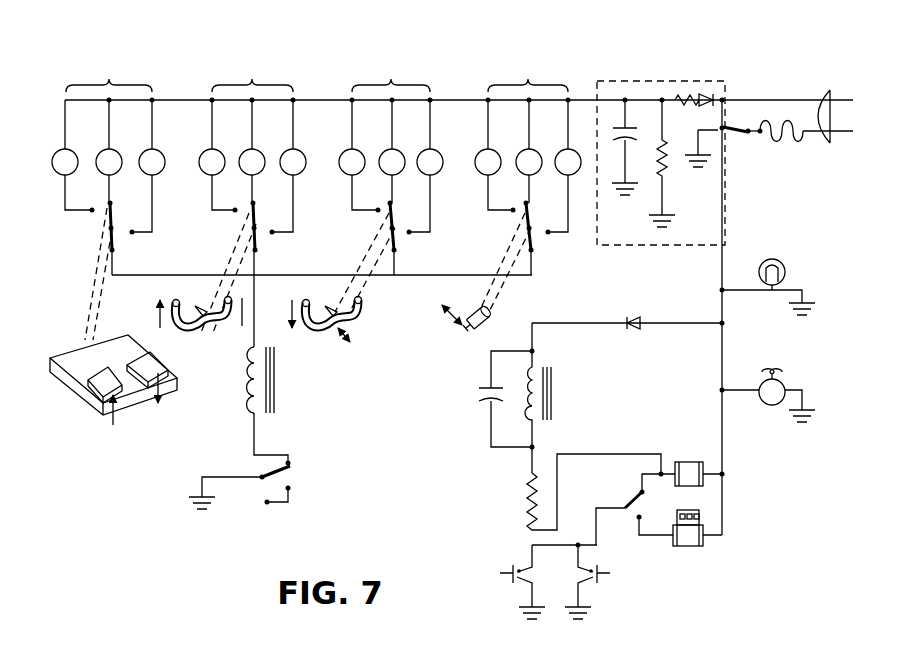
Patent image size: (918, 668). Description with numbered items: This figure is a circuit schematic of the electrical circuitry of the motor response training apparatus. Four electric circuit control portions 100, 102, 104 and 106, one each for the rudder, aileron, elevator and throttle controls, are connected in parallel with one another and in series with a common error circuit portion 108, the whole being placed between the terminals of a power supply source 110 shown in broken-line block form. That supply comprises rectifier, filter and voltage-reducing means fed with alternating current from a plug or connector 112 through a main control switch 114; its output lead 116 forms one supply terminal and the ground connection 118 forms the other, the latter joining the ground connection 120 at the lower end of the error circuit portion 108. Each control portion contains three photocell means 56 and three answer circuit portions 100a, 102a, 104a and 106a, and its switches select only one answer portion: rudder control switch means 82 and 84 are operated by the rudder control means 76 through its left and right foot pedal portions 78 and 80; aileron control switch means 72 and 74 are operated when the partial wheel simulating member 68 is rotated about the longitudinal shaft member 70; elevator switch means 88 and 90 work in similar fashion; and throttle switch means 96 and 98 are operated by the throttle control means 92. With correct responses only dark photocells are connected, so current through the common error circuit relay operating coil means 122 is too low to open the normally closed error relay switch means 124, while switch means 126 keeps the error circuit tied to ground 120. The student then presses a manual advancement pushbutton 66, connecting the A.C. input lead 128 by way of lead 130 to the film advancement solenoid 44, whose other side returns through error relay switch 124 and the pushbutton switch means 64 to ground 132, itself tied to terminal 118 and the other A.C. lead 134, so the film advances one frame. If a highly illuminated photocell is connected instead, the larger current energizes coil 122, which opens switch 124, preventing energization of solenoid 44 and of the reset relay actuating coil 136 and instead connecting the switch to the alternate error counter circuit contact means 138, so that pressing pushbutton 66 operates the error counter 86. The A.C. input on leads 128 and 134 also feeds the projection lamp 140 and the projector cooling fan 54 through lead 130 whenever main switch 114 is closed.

The film advancement solenoid 44 is at (690, 462).
The projector cooling fan 54 is at (790, 374).
The photocell means 56 is at (100, 150).
The advancement pushbutton switch means 64 is at (527, 567).
The manual advancement pushbuttons 66 is at (498, 573).
The partial wheel simulating member 68 is at (210, 326).
The longitudinal shaft member 70 is at (198, 306).
The aileron control switch means 72 is at (246, 213).
The aileron control switch means 74 is at (259, 243).
The rudder control means 76 is at (100, 420).
The left foot pedal portion 78 is at (98, 400).
The right foot pedal portion 80 is at (162, 368).
The rudder control switch means 82 is at (104, 213).
The rudder control switch means 84 is at (117, 243).
The error counter 86 is at (690, 550).
The elevator switch means 88 is at (382, 215).
The elevator switch means 90 is at (400, 245).
The airplane engine throttle control means 92 is at (478, 330).
The throttle switch means 96 is at (521, 213).
The throttle switch means 98 is at (537, 245).
The electric circuit control portion 100 is at (109, 72).
The answer circuit portions 100a is at (66, 198).
The electric circuit control portion 102 is at (252, 72).
The answer circuit portions 102a is at (213, 198).
The electric circuit control portion 104 is at (391, 72).
The answer circuit portions 104a is at (353, 198).
The electric circuit control portion 106 is at (528, 72).
The answer circuit portions 106a is at (524, 190).
The common error circuit portion 108 is at (254, 333).
The power supply source 110 is at (660, 80).
The plug or connector 112 is at (828, 98).
The main control switch 114 is at (741, 134).
The output lead 116 is at (598, 94).
The ground connection 118 is at (699, 166).
The ground connection 120 is at (200, 506).
The common error circuit relay operating coil means 122 is at (272, 392).
The error relay switch means 124 is at (627, 506).
The switch means 126 is at (297, 468).
The main A.C. input lead 128 is at (766, 100).
The lead 130 is at (728, 260).
The ground 132 is at (527, 614).
The A.C. input lead 134 is at (805, 134).
The reset relay actuating coil 136 is at (553, 391).
The alternate error counter circuit contact means 138 is at (642, 516).
The projection lamp 140 is at (786, 272).